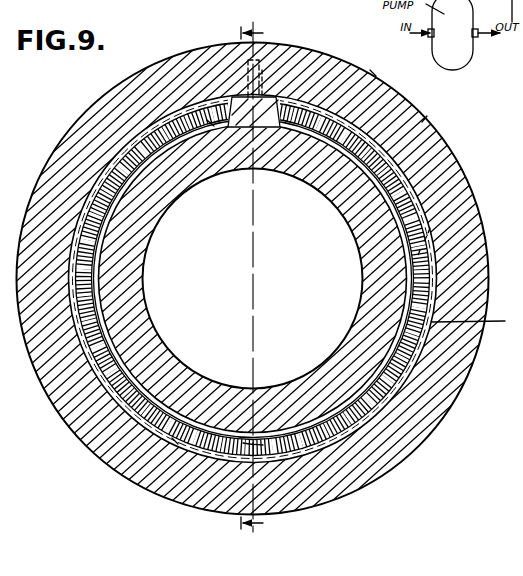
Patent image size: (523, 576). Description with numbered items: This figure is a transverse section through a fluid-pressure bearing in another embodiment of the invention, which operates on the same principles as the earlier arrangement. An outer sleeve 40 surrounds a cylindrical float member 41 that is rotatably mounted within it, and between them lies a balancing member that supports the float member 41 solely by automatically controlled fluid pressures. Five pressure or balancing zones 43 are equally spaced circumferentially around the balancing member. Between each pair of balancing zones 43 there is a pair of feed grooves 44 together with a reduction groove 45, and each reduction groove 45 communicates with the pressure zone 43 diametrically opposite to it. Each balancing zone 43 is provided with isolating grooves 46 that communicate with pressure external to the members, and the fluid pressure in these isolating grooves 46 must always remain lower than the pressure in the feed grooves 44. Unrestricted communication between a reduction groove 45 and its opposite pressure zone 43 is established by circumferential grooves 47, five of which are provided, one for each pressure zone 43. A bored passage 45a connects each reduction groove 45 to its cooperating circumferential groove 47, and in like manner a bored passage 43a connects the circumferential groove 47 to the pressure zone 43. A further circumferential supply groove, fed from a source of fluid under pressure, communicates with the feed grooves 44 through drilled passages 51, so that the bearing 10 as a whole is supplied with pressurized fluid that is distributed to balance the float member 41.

The bearing assembly 10 is at (379, 285).
The sleeve 40 is at (404, 104).
The cylindrical float member 41 is at (98, 418).
The pressure or balancing zone 43 is at (424, 133).
The bored passage 43a is at (258, 440).
The feed groove 44 is at (233, 125).
The reduction groove 45 is at (275, 100).
The bored passage 45a is at (263, 95).
The isolating groove 46 is at (213, 124).
The circumferential groove 47 is at (427, 116).
The drilled passage 51 is at (455, 168).